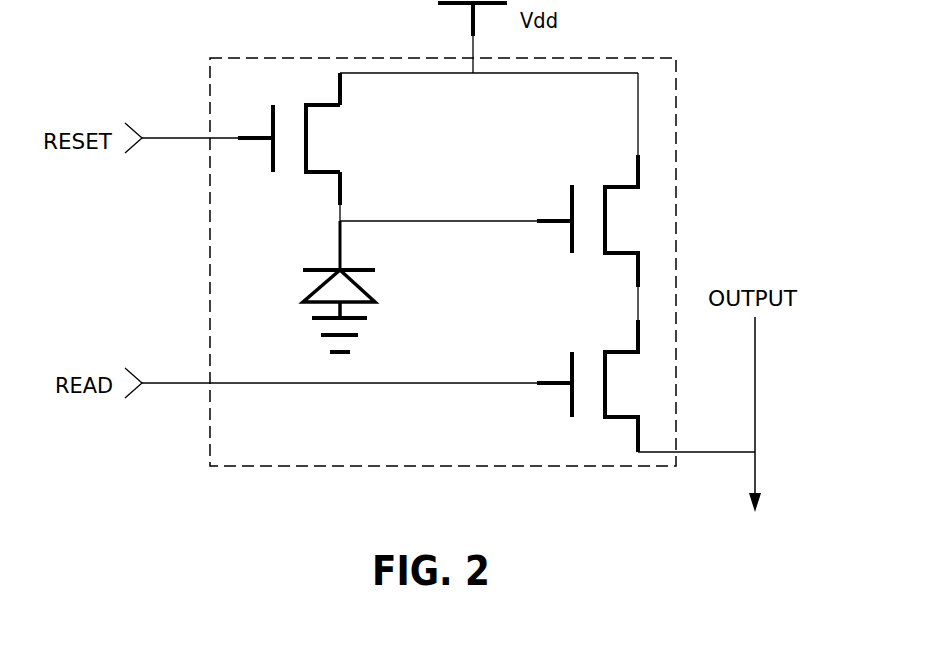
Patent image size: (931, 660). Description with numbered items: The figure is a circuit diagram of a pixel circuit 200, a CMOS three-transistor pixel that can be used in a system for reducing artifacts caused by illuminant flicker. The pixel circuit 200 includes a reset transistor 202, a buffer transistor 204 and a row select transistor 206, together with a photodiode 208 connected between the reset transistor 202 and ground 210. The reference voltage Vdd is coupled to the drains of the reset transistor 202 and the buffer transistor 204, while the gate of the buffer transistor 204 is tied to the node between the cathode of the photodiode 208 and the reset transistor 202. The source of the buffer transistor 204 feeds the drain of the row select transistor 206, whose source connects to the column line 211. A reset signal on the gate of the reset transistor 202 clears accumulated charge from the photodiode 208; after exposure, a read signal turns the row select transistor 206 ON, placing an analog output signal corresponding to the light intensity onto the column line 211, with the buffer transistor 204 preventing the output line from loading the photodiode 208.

The pixel circuit 200 is at (440, 451).
The reset transistor 202 is at (374, 153).
The buffer transistor 204 is at (581, 167).
The row select transistor 206 is at (579, 331).
The photodiode 208 is at (397, 257).
The ground 210 is at (378, 353).
The column line 211 is at (755, 387).